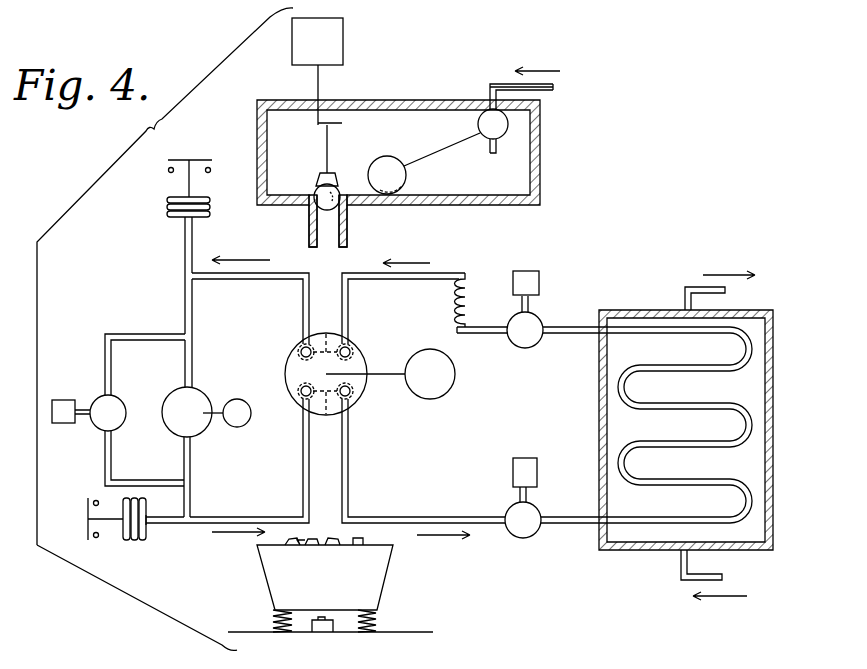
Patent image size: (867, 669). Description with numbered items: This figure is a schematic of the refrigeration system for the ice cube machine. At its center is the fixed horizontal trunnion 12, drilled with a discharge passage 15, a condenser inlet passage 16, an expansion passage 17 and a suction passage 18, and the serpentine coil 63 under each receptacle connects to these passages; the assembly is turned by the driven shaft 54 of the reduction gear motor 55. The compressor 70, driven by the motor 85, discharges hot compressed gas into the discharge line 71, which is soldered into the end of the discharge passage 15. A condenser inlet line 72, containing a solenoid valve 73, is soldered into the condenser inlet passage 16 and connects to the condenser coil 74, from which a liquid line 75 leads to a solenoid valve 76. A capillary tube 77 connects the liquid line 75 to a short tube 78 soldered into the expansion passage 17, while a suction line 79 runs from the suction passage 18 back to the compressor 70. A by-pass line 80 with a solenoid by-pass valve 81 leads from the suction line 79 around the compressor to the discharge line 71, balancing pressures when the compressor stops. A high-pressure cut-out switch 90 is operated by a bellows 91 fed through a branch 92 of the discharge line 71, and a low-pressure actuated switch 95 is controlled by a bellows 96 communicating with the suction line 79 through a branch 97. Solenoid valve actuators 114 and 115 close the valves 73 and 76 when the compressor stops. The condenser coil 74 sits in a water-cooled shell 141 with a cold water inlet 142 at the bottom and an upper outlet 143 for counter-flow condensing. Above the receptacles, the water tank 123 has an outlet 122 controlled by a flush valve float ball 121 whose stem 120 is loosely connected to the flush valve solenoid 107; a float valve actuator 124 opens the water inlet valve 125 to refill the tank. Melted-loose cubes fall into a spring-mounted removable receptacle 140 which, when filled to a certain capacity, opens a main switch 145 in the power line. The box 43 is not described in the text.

The horizontal trunnion 12 is at (285, 373).
The discharge passage 15 is at (297, 393).
The condenser inlet passage 16 is at (353, 397).
The expansion passage 17 is at (353, 350).
The suction passage 18 is at (297, 352).
The solenoid control box 43 is at (63, 400).
The driven shaft 54 is at (392, 378).
The reduction gear motor 55 is at (455, 372).
The serpentine coil 63 is at (326, 333).
The compressor 70 is at (205, 396).
The discharge line 71 is at (240, 514).
The condenser inlet line 72 is at (412, 516).
The solenoid valve 73 is at (512, 540).
The condenser coil 74 is at (684, 452).
The liquid line 75 is at (567, 325).
The solenoid valve 76 is at (516, 349).
The capillary tube 77 is at (466, 302).
The short tube 78 is at (395, 283).
The suction line 79 is at (273, 282).
The by-pass line 80 is at (148, 336).
The solenoid by-pass valve 81 is at (92, 436).
The motor 85 is at (232, 430).
The high-pressure cut-out switch 90 is at (86, 518).
The bellows 91 is at (130, 545).
The branch 92 is at (170, 528).
The low-pressure actuated switch 95 is at (190, 148).
The bellows 96 is at (210, 205).
The branch 97 is at (185, 241).
The flush valve solenoid 107 is at (343, 50).
The solenoid valve actuator 114 is at (524, 457).
The solenoid valve actuator 115 is at (522, 270).
The stem 120 is at (322, 130).
The flush valve float ball 121 is at (318, 179).
The outlet 122 is at (310, 228).
The water tank 123 is at (541, 155).
The float valve actuator 124 is at (385, 161).
The water inlet valve 125 is at (479, 124).
The removable receptacle 140 is at (385, 585).
The shell 141 is at (773, 360).
The inlet 142 is at (681, 568).
The upper outlet 143 is at (685, 296).
The main switch 145 is at (322, 634).